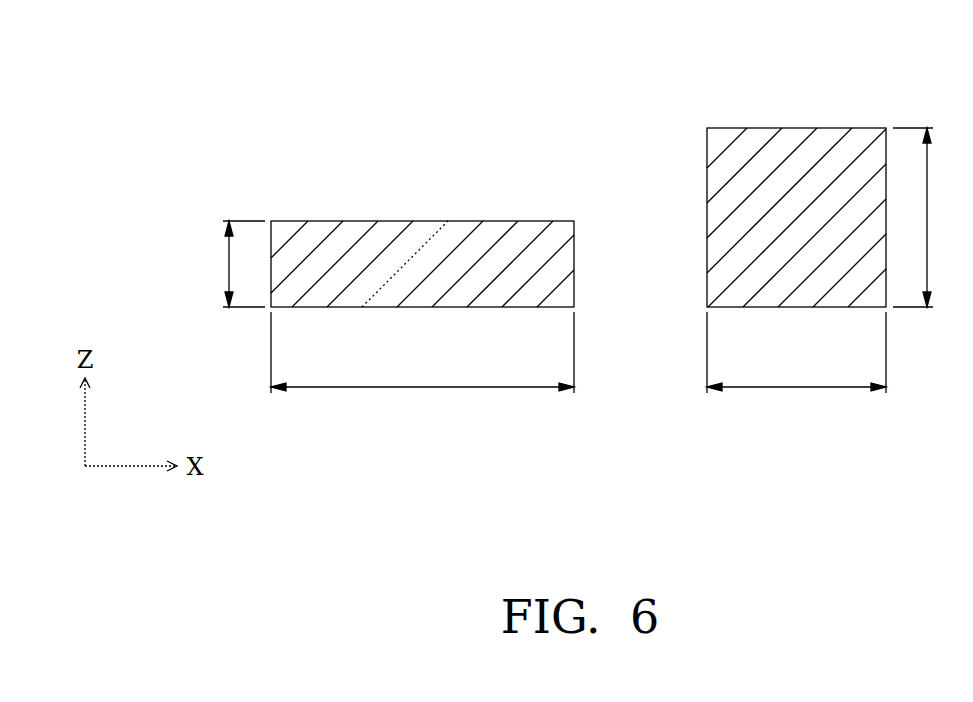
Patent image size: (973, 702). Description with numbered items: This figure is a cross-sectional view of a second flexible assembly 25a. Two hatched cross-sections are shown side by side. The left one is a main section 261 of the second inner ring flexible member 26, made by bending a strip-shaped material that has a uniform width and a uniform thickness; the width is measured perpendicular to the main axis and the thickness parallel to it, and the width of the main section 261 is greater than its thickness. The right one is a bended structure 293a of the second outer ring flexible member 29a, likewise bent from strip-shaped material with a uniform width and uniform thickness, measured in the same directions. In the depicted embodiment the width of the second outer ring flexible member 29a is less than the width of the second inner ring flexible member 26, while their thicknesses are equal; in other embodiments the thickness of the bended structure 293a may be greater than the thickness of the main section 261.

The second flexible assembly 25a is at (208, 88).
The second inner ring flexible member 26 is at (517, 221).
The main section 261 is at (423, 262).
The second outer ring flexible member 29a is at (865, 128).
The bended structure 293a is at (795, 168).